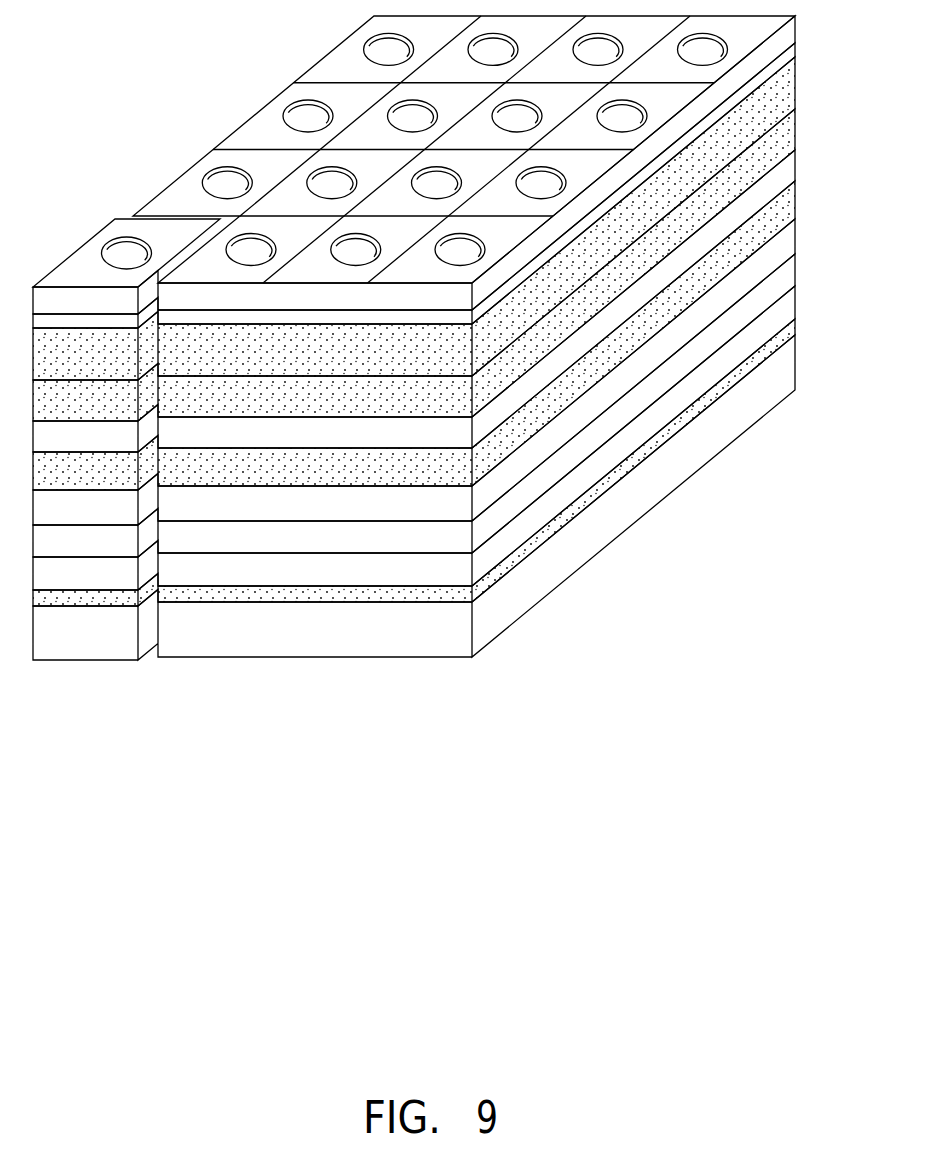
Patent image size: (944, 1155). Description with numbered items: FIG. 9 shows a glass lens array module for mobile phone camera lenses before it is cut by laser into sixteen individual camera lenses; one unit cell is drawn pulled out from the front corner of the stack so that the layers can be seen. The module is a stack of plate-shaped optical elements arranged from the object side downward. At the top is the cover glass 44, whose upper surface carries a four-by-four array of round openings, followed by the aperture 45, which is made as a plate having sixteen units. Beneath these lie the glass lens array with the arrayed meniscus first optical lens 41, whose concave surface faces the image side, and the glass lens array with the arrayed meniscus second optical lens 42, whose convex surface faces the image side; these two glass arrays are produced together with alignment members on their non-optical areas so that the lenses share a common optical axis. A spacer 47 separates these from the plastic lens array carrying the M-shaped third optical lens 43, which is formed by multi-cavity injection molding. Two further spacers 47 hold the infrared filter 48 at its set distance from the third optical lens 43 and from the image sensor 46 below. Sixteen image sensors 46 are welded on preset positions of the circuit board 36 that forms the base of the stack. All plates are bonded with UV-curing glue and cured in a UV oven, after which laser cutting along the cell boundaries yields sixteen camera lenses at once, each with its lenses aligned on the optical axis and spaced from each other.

The circuit board 36 is at (780, 372).
The first optical lens 41 is at (780, 97).
The second optical lens 42 is at (780, 138).
The third optical lens 43 is at (780, 204).
The cover glass 44 is at (782, 32).
The aperture 45 is at (785, 60).
The image sensor 46 is at (780, 339).
The spacer 47 is at (780, 176).
The infrared filter 48 is at (780, 279).